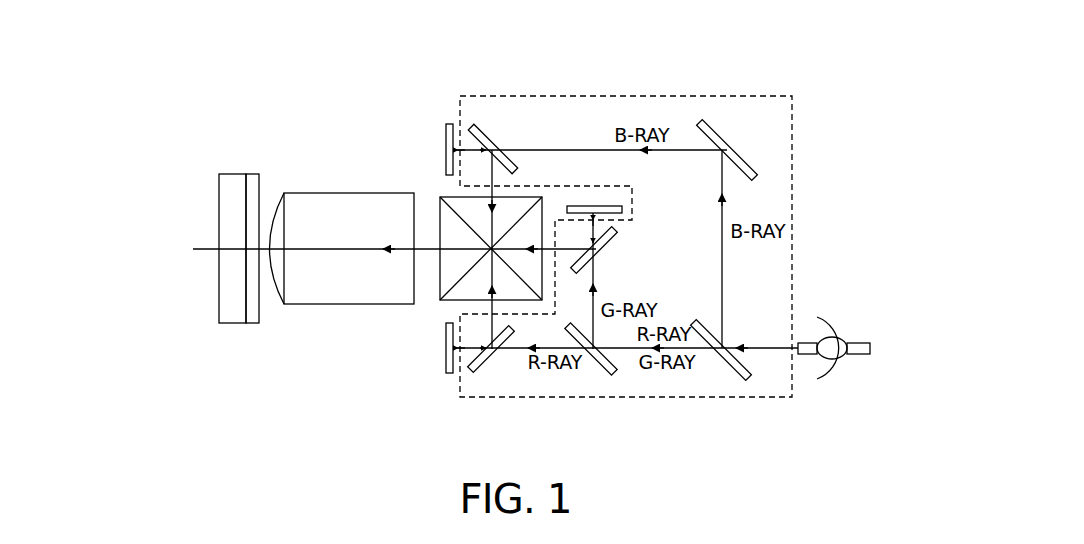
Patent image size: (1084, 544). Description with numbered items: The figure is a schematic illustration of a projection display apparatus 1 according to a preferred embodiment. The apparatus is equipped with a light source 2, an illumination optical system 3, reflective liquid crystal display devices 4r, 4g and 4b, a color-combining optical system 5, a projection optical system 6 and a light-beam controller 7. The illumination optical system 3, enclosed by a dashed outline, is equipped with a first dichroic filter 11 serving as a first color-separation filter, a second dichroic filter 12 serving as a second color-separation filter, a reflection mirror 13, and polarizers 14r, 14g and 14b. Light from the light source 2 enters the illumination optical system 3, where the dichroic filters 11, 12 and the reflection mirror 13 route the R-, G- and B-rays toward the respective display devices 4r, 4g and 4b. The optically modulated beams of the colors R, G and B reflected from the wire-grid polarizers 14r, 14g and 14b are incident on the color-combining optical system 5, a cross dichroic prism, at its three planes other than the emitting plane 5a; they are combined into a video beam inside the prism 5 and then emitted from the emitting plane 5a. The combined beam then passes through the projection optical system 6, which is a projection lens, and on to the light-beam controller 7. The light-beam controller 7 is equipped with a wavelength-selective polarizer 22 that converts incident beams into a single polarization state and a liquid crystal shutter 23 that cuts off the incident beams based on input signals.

The projection display apparatus 1 is at (596, 62).
The light source 2 is at (834, 319).
The illumination optical system 3 is at (670, 96).
The liquid crystal display device 4b is at (446, 141).
The liquid crystal display device 4g is at (622, 210).
The liquid crystal display device 4r is at (446, 351).
The color-combining optical system 5 is at (460, 240).
The emitting plane 5a is at (440, 287).
The projection optical system 6 is at (346, 305).
The light-beam controller 7 is at (239, 203).
The first dichroic filter 11 is at (733, 373).
The second dichroic filter 12 is at (598, 378).
The reflection mirror 13 is at (734, 146).
The polarizer 14b is at (501, 137).
The polarizer 14g is at (614, 248).
The polarizer 14r is at (490, 373).
The wavelength-selective polarizer 22 is at (258, 222).
The liquid crystal shutter 23 is at (230, 174).